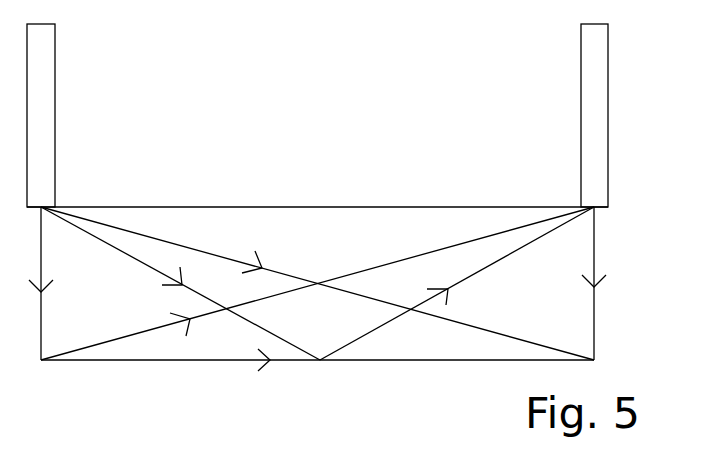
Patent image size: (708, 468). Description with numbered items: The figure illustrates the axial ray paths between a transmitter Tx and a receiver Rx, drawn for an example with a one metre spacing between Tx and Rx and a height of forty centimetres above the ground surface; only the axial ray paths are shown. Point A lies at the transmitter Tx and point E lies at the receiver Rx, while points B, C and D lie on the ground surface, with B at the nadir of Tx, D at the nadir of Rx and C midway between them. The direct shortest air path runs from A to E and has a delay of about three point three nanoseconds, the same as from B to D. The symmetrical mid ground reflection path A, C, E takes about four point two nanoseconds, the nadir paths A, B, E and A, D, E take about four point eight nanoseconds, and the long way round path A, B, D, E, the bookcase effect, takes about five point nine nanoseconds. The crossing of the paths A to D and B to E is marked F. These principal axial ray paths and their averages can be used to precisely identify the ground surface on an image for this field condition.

The transmitter Tx is at (58, 115).
The receiver Rx is at (577, 115).
The point A is at (38, 283).
The point B is at (311, 296).
The point C is at (317, 296).
The point D is at (329, 294).
The point E is at (599, 283).
The point F (crossing point) F is at (320, 265).